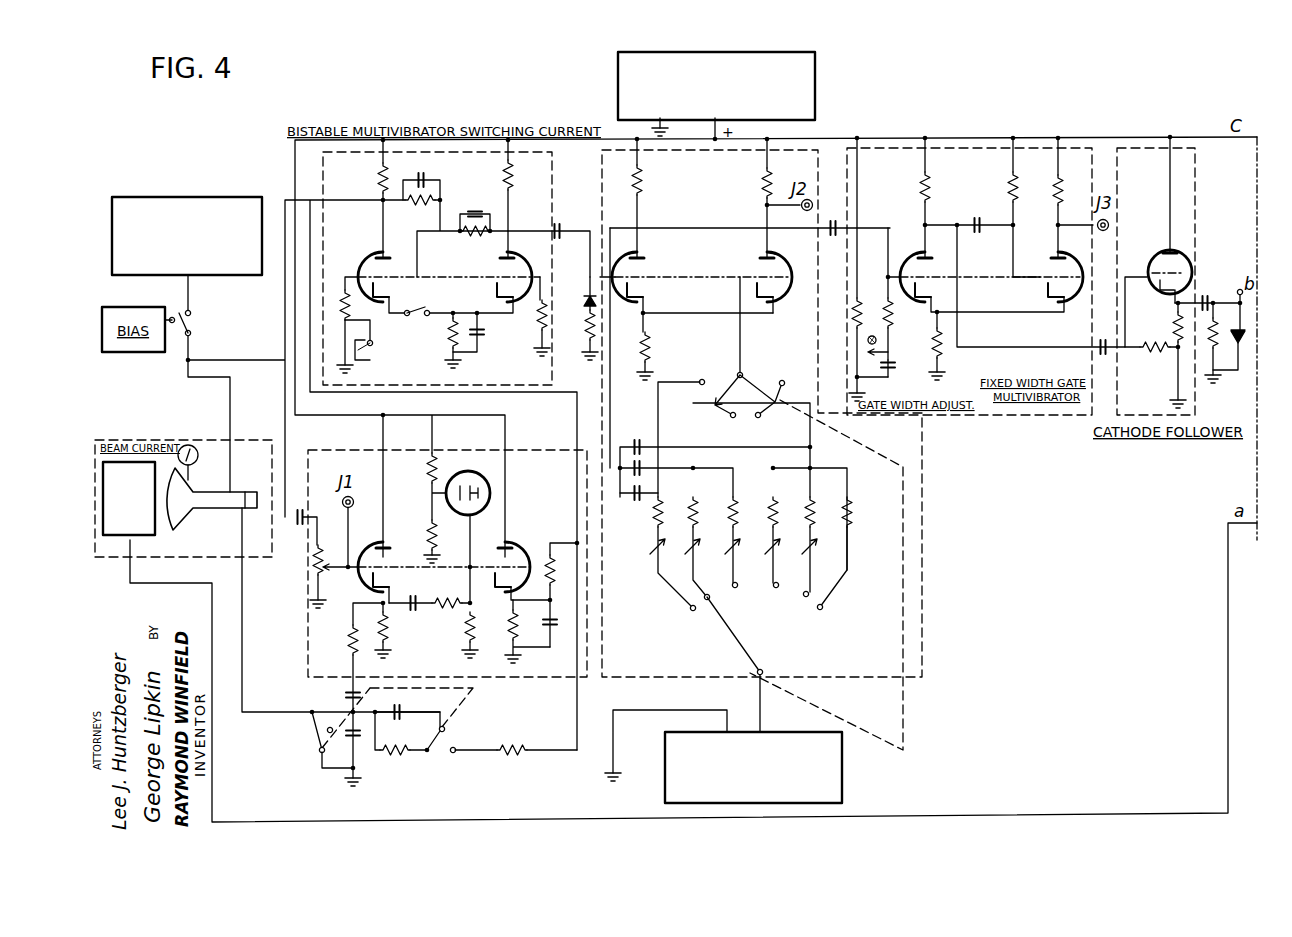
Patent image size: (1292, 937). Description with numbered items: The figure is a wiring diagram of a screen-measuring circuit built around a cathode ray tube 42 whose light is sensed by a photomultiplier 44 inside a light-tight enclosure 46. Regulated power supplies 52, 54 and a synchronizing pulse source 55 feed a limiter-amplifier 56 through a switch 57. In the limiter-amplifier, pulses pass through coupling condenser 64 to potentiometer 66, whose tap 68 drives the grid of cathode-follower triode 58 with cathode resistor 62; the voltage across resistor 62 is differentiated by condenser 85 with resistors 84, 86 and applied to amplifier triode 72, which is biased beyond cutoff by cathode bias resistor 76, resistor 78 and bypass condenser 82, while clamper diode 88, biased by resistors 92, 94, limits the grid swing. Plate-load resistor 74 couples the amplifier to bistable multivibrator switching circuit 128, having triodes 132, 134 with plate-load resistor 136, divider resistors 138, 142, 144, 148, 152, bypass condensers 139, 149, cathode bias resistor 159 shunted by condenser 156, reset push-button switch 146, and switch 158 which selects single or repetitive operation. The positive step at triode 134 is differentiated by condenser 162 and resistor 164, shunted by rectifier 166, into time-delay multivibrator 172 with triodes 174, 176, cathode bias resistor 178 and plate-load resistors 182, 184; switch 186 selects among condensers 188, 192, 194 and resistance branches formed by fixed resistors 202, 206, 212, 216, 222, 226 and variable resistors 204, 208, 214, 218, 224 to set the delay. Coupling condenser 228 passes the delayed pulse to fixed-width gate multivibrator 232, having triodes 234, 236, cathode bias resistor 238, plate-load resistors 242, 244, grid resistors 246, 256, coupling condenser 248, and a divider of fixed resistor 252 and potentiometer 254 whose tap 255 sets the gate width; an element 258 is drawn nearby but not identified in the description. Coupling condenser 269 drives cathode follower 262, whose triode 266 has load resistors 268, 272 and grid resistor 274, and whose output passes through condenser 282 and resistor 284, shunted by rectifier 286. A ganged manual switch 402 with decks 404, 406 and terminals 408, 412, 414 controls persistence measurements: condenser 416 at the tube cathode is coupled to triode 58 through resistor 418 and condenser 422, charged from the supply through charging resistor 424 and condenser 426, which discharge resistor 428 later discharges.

The cathode ray tube 42 is at (210, 485).
The photomultiplier 44 is at (156, 537).
The light-tight enclosure 46 is at (162, 436).
The direct current regulated power supply 52 is at (816, 72).
The direct current regulated power supply 54 is at (845, 778).
The synchronizing pulse source 55 is at (193, 197).
The limiter-amplifier 56 is at (400, 447).
The switch 57 is at (192, 320).
The vacuum triode 58 is at (374, 550).
The cathode resistor 62 is at (386, 624).
The coupling condenser 64 is at (302, 524).
The potentiometer 66 is at (325, 550).
The tap 68 is at (330, 574).
The vacuum triode 72 is at (518, 553).
The plate-load resistor 74 is at (379, 178).
The cathode bias resistor 76 is at (512, 635).
The resistor 78 is at (552, 553).
The bypass condenser 82 is at (557, 628).
The grid resistor 84 is at (468, 627).
The coupling condenser 85 is at (420, 596).
The resistor 86 is at (460, 594).
The clamper diode 88 is at (488, 470).
The resistor 92 is at (428, 470).
The resistor 94 is at (430, 528).
The bistable multivibrator switching circuit 128 is at (543, 164).
The vacuum triode 132 is at (368, 260).
The vacuum triode 134 is at (524, 262).
The plate-load resistor 136 is at (512, 186).
The resistor 138 is at (470, 238).
The bypass condenser 139 is at (474, 208).
The resistor 142 is at (335, 286).
The resistor 144 is at (340, 332).
The push-button switch 146 is at (378, 350).
The resistor 148 is at (425, 204).
The bypass condenser 149 is at (423, 176).
The resistor 152 is at (540, 316).
The bypass condenser 156 is at (484, 336).
The single-pole single-throw switch 158 is at (438, 306).
The cathode bias resistor 159 is at (407, 307).
The condenser 162 is at (560, 224).
The resistor 164 is at (592, 345).
The rectifier 166 is at (575, 296).
The time-delay multivibrator circuit 172 is at (922, 530).
The vacuum triode 174 is at (636, 305).
The vacuum triode 176 is at (788, 258).
The common cathode bias resistor 178 is at (643, 337).
The plate-load resistor 182 is at (641, 180).
The plate-load resistor 184 is at (765, 185).
The switch 186 is at (902, 596).
The condenser 188 is at (640, 428).
The condenser 192 is at (642, 468).
The condenser 194 is at (632, 497).
The fixed resistor 202 is at (664, 502).
The variable resistor 204 is at (668, 555).
The fixed resistor 206 is at (702, 502).
The variable resistor 208 is at (706, 555).
The fixed resistor 212 is at (740, 502).
The variable resistor 214 is at (746, 555).
The fixed resistor 216 is at (778, 502).
The variable resistor 218 is at (786, 555).
The fixed resistor 222 is at (816, 502).
The variable resistor 224 is at (824, 555).
The fixed resistor 226 is at (852, 502).
The coupling condenser 228 is at (844, 218).
The fixed-width gate multivibrator 232 is at (960, 412).
The vacuum triode 234 is at (906, 254).
The vacuum triode 236 is at (1078, 309).
The common cathode bias resistor 238 is at (944, 352).
The plate-load resistor 242 is at (930, 184).
The plate-load resistor 244 is at (1054, 178).
The grid resistor 246 is at (1009, 188).
The coupling condenser 248 is at (976, 230).
The fixed resistor 252 is at (852, 316).
The potentiometer 254 is at (736, 384).
The tap 255 is at (889, 342).
The grid resistor 256 is at (888, 310).
The capacitor 258 is at (896, 372).
The cathode follower 262 is at (1195, 184).
The vacuum triode 266 is at (1158, 262).
The load resistor 268 is at (1172, 318).
The coupling condenser 269 is at (1092, 352).
The load resistor 272 is at (1178, 358).
The grid resistor 274 is at (1152, 336).
The coupling condenser 282 is at (1208, 296).
The resistor 284 is at (1210, 348).
The rectifier 286 is at (1240, 376).
The manual switch 402 is at (479, 694).
The switch deck 404 is at (315, 748).
The switch deck 406 is at (446, 733).
The active terminal 408 is at (310, 731).
The active terminal 412 is at (432, 764).
The active terminal 414 is at (462, 748).
The condenser 416 is at (362, 740).
The resistor 418 is at (354, 635).
The condenser 422 is at (345, 696).
The charging resistor 424 is at (499, 750).
The condenser 426 is at (398, 706).
The discharge resistor 428 is at (402, 733).